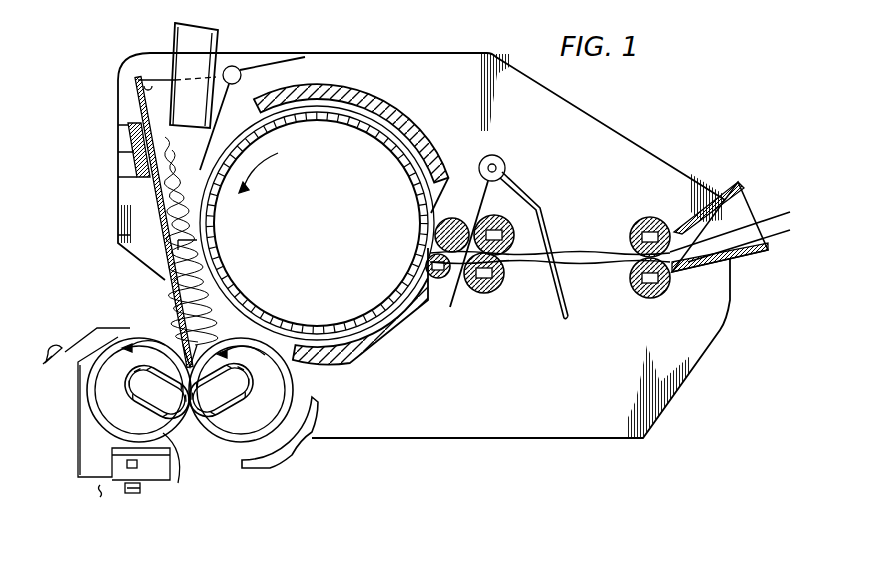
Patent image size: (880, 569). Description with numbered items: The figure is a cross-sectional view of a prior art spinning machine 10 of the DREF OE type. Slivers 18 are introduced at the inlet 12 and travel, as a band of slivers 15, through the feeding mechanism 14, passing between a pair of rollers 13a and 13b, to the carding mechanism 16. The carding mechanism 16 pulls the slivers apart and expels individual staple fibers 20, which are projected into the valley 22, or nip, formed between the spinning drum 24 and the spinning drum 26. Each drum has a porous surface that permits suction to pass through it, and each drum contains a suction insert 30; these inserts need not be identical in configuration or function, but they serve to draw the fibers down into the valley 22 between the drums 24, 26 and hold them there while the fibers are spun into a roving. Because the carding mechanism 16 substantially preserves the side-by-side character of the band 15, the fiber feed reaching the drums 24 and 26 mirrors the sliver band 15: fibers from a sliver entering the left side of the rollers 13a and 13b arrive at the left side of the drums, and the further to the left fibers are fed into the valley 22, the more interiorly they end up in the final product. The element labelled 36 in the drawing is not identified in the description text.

The spinning machine 10 is at (425, 52).
The inlet 12 is at (757, 240).
The roller 13a is at (508, 228).
The roller 13b is at (483, 293).
The feeding mechanism 14 is at (653, 298).
The band of slivers 15 is at (603, 254).
The carding mechanism 16 is at (423, 130).
The slivers 18 is at (775, 198).
The individual staple fibers 20 is at (165, 192).
The valley 22 is at (183, 340).
The spinning drum 24 is at (297, 381).
The spinning drum 26 is at (153, 473).
The suction insert 30 is at (165, 412).
The auger flights 36 is at (189, 391).